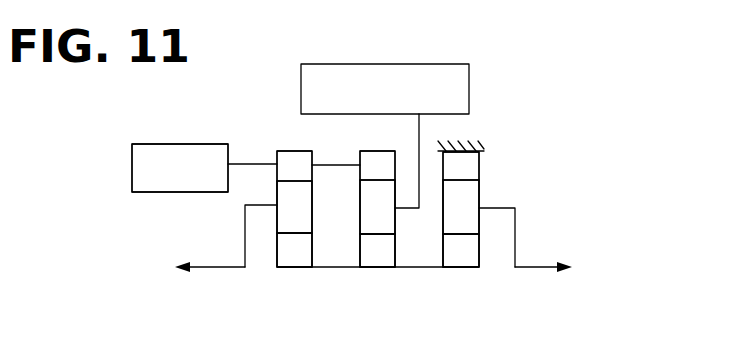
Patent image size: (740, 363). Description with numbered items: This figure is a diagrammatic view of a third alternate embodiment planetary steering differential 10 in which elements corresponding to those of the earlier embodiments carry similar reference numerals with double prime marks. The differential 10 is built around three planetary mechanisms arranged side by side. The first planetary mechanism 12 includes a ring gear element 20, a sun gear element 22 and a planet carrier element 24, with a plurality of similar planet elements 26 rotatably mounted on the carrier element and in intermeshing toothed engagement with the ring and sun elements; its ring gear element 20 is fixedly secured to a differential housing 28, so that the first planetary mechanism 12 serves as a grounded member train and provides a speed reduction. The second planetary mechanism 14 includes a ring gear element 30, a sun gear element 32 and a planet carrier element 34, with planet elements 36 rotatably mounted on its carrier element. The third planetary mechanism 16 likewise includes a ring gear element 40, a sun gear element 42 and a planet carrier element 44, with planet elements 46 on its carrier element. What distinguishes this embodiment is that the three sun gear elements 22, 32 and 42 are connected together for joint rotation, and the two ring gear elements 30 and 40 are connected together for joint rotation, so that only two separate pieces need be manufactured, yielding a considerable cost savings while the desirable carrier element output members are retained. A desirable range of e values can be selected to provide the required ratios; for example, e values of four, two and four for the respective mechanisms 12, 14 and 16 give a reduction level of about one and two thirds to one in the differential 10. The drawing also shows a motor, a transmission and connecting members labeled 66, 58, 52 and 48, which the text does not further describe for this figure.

The planetary steering differential 10 is at (147, 126).
The motor 66 is at (132, 168).
The transmission 58 is at (337, 66).
The planet carrier element 34 is at (413, 210).
The ring gear element 40 is at (292, 155).
The planet elements 46 is at (283, 191).
The sun gear element 42 is at (283, 250).
The planet carrier element 44 is at (245, 235).
The output shaft 52 is at (228, 268).
The ring gear element 30 is at (376, 155).
The planet elements 36 is at (375, 207).
The sun gear element 32 is at (368, 248).
The differential housing 28 is at (462, 148).
The ring gear element 20 is at (470, 162).
The planet elements 26 is at (467, 192).
The sun gear element 22 is at (473, 253).
The planet carrier element 24 is at (516, 228).
The output 48 is at (540, 266).
The third planetary mechanism 16 is at (299, 276).
The second planetary mechanism 14 is at (378, 276).
The first planetary mechanism 12 is at (466, 276).